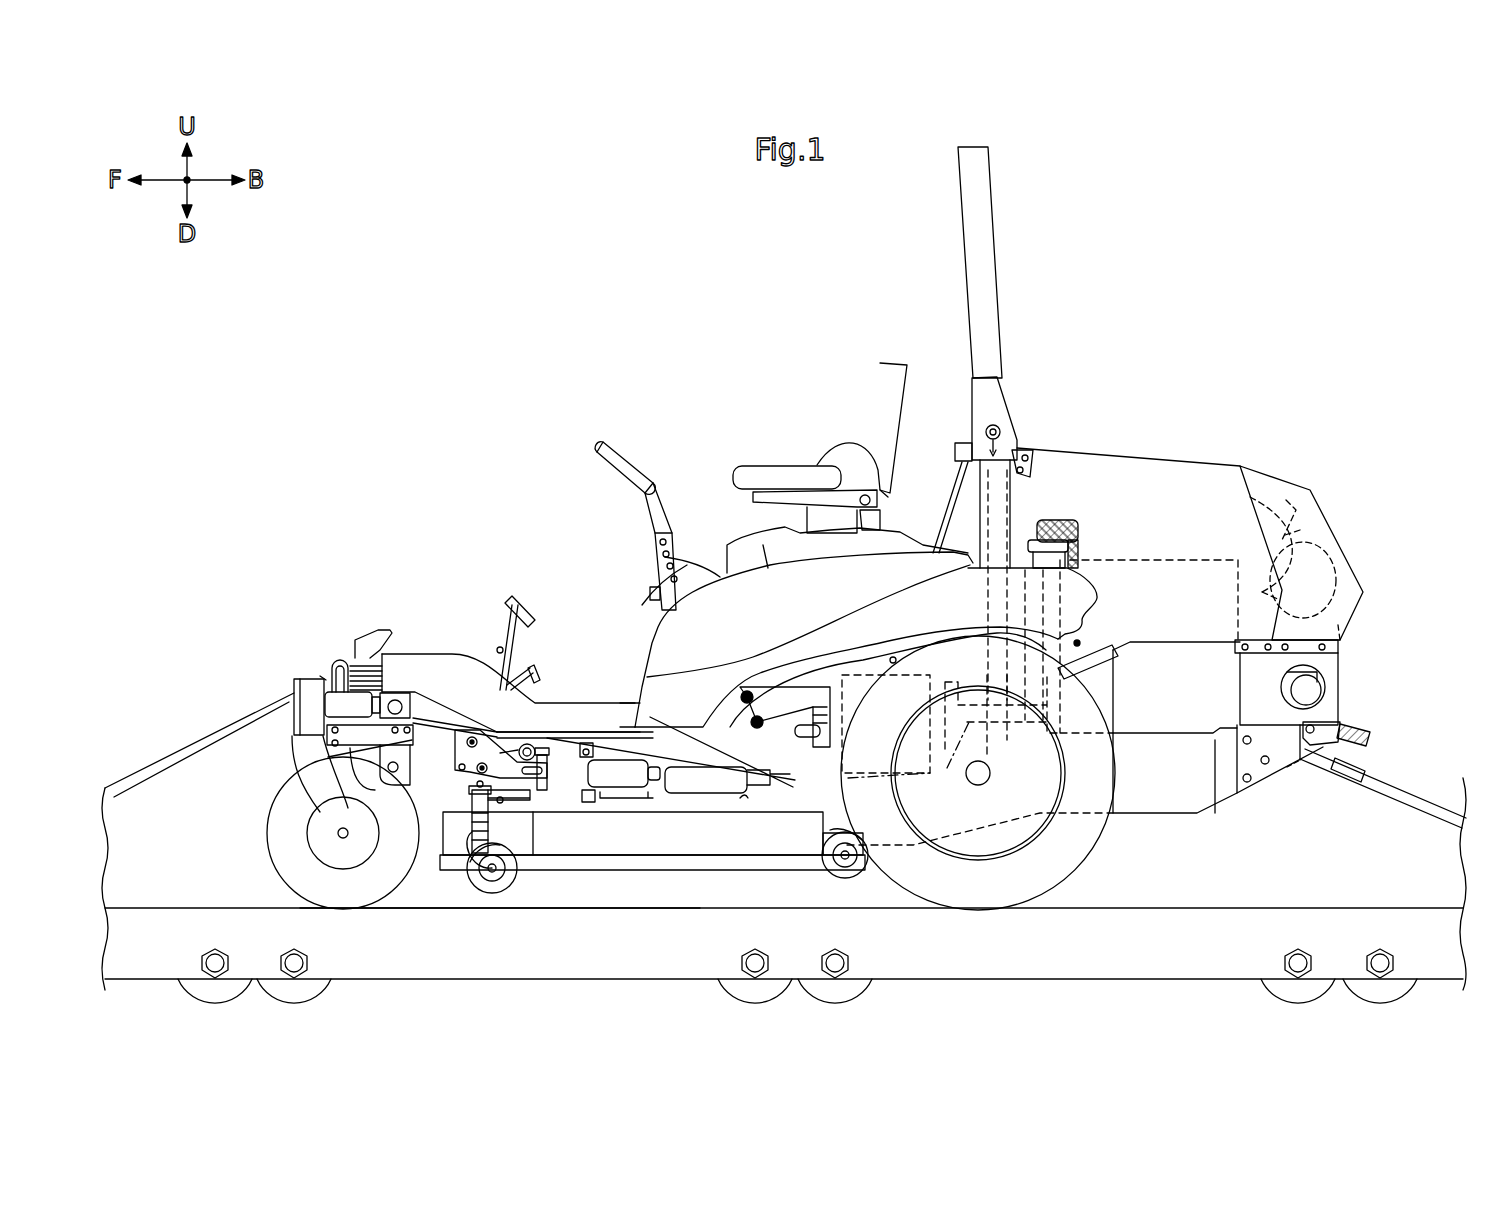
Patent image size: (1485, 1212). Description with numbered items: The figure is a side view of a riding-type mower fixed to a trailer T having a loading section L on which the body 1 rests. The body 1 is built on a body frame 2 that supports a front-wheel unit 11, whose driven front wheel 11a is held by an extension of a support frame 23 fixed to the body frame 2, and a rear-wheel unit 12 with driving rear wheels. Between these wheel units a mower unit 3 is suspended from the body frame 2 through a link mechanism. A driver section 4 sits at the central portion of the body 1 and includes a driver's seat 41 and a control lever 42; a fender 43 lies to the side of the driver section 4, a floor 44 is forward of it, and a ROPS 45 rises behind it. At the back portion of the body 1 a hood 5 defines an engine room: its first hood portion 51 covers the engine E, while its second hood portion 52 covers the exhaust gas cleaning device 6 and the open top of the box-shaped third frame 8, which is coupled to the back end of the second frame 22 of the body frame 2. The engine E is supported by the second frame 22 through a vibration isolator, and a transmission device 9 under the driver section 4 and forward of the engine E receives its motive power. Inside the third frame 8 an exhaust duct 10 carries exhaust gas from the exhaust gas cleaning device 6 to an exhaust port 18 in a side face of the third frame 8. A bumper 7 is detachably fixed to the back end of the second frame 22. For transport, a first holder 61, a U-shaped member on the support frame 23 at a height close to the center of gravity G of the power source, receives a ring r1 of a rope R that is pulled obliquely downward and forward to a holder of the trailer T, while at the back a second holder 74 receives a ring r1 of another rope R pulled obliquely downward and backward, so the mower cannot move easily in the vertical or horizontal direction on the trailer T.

The body 1 is at (488, 412).
The body frame 2 is at (1224, 751).
The mower unit 3 is at (650, 876).
The driver section 4 is at (756, 380).
The hood 5 is at (1208, 444).
The exhaust gas cleaning device 6 is at (1352, 545).
The bumper 7 is at (1372, 726).
The third frame 8 is at (1268, 790).
The transmission device 9 is at (915, 672).
The exhaust duct 10 is at (1288, 500).
The front-wheel unit 11 is at (291, 740).
The front wheel 11a is at (270, 857).
The rear-wheel unit 12 is at (1075, 852).
The exhaust port 18 is at (1282, 690).
The second frame 22 is at (1200, 775).
The support frame 23 is at (358, 698).
The driver's seat 41 is at (868, 410).
The control lever 42 is at (620, 478).
The fender 43 is at (660, 648).
The floor 44 is at (575, 700).
The ROPS 45 is at (990, 242).
The first hood portion 51 is at (1085, 468).
The second hood portion 52 is at (1325, 520).
The first holder 61 is at (332, 666).
The second holder 74 is at (1330, 720).
The engine E is at (1195, 556).
The center of gravity G is at (1080, 643).
The loading section L is at (393, 893).
The rope R is at (205, 720).
The trailer T is at (530, 975).
The ring r1 is at (320, 676).